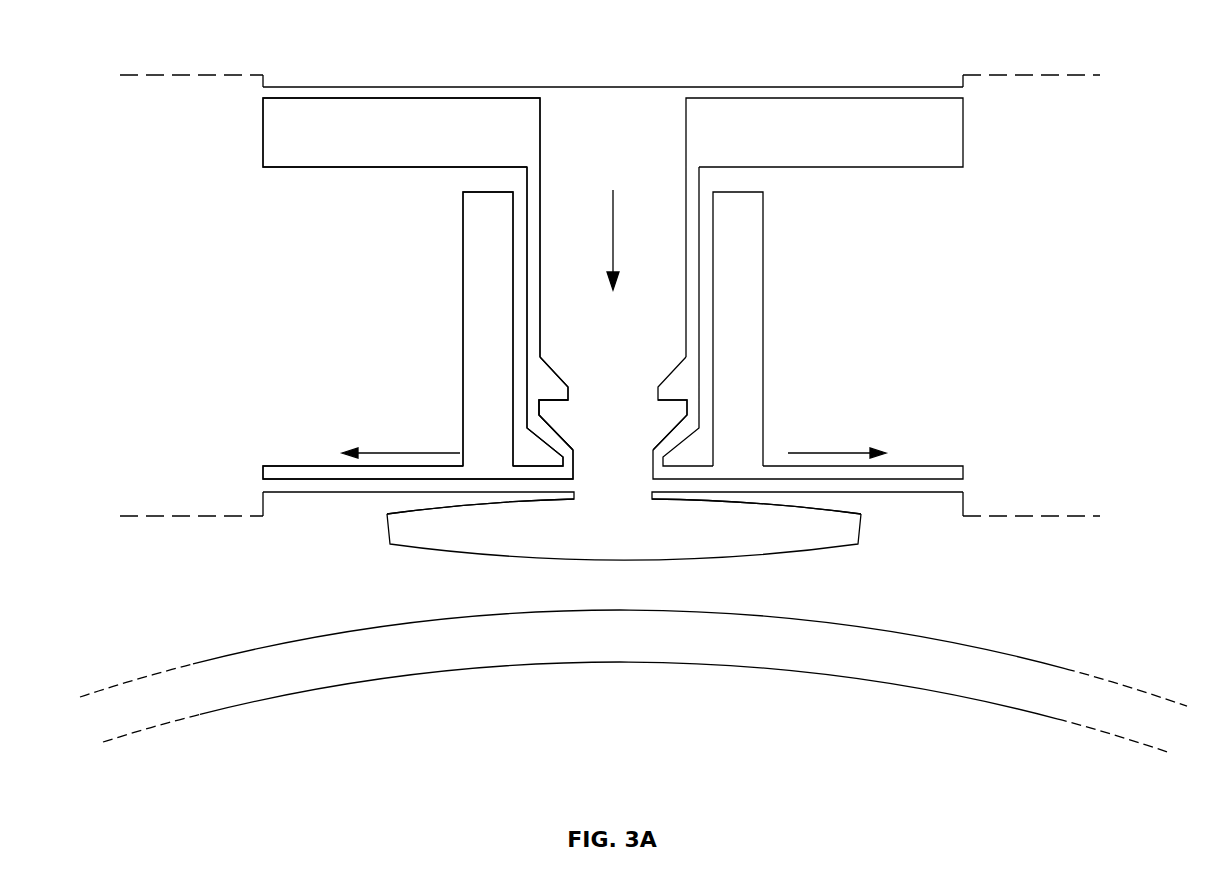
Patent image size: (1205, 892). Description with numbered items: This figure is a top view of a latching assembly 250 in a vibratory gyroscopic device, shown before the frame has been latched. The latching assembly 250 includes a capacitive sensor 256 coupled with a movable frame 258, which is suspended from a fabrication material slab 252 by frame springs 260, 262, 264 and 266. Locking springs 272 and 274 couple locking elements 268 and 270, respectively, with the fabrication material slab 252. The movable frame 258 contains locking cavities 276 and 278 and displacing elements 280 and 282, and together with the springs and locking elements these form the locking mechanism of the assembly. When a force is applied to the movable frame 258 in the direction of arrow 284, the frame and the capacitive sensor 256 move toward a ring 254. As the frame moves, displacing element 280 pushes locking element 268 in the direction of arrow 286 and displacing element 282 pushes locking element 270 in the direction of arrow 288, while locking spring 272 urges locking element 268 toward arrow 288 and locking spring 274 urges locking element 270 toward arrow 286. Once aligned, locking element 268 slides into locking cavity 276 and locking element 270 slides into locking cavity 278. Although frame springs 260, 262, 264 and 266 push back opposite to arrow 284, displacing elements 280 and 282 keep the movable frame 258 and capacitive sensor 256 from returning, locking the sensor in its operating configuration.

The latching assembly 250 is at (289, 574).
The fabrication material slab 252 is at (323, 334).
The ring 254 is at (625, 663).
The capacitive sensor 256 is at (862, 544).
The movable frame 258 is at (620, 133).
The frame spring 260 is at (403, 86).
The frame spring 262 is at (775, 86).
The frame spring 264 is at (365, 492).
The frame spring 266 is at (920, 492).
The locking element 268 is at (512, 455).
The locking element 270 is at (717, 453).
The locking spring 272 is at (513, 325).
The locking spring 274 is at (712, 325).
The locking cavity 276 is at (556, 380).
The locking cavity 278 is at (686, 380).
The displacing element 280 is at (562, 419).
The displacing element 282 is at (663, 423).
The arrow 284 is at (613, 222).
The arrow 286 is at (412, 453).
The arrow 288 is at (810, 453).